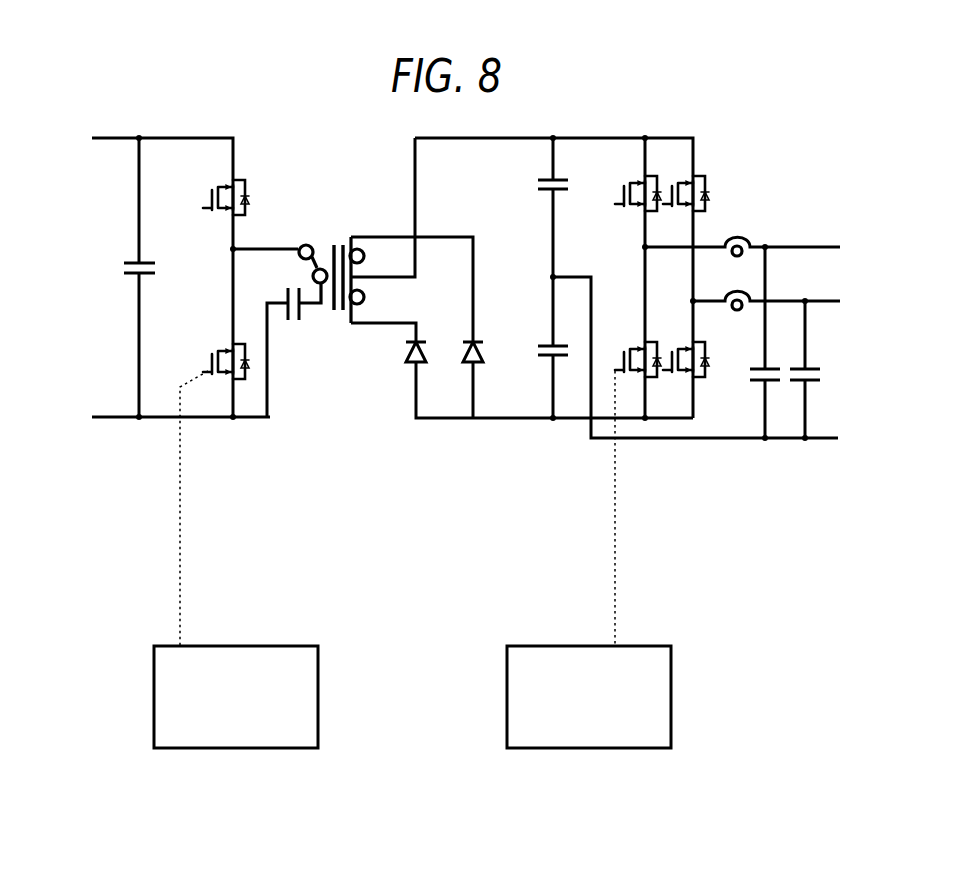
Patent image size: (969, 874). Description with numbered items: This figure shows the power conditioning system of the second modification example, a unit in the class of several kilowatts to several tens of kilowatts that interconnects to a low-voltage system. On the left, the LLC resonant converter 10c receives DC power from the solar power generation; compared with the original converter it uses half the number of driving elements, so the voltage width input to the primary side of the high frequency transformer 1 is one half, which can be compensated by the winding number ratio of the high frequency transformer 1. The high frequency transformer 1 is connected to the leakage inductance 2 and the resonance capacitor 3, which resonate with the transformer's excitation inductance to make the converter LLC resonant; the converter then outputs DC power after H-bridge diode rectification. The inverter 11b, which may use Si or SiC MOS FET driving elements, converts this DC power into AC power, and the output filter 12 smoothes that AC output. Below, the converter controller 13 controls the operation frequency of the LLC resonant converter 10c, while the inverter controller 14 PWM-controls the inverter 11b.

The high frequency transformer 1 is at (339, 253).
The leakage inductance 2 is at (296, 242).
The resonance capacitor 3 is at (308, 352).
The LLC resonant converter 10c is at (373, 343).
The inverter 11b is at (698, 450).
The output filter 12 is at (832, 450).
The converter controller 13 is at (245, 647).
The inverter controller 14 is at (585, 647).